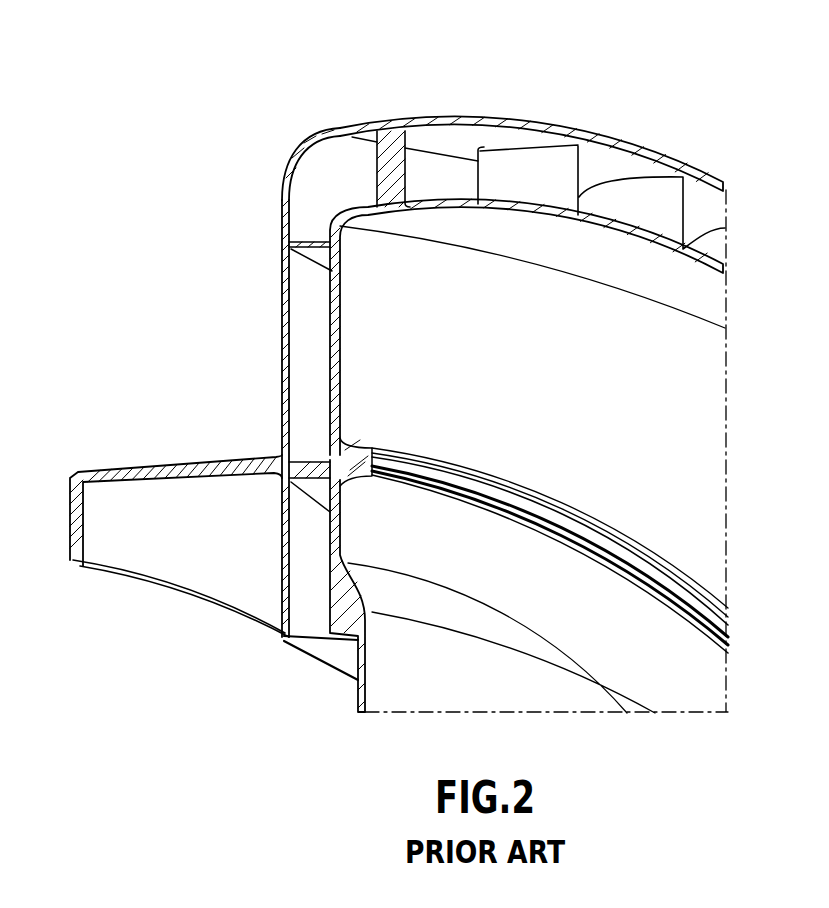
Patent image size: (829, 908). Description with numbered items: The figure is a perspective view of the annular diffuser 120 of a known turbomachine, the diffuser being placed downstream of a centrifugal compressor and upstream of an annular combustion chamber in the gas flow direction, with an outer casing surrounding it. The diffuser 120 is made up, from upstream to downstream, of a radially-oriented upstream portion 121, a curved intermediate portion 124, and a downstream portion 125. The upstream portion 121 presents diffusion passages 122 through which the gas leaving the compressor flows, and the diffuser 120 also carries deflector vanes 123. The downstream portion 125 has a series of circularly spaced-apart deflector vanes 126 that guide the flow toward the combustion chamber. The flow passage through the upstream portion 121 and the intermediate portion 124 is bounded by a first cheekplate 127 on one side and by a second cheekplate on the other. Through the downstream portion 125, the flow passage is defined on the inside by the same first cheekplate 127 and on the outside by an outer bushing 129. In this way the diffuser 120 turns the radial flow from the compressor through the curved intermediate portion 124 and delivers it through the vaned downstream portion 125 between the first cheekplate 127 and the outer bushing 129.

The annular diffuser 120 is at (192, 167).
The radially-oriented upstream portion 121 is at (280, 291).
The diffusion passages 122 is at (313, 345).
The deflector vanes 123 is at (317, 251).
The curved intermediate portion 124 is at (286, 160).
The downstream portion 125 is at (474, 116).
The deflector vanes 126 is at (388, 148).
The first cheekplate 127 is at (342, 357).
The outer bushing 129 is at (428, 129).